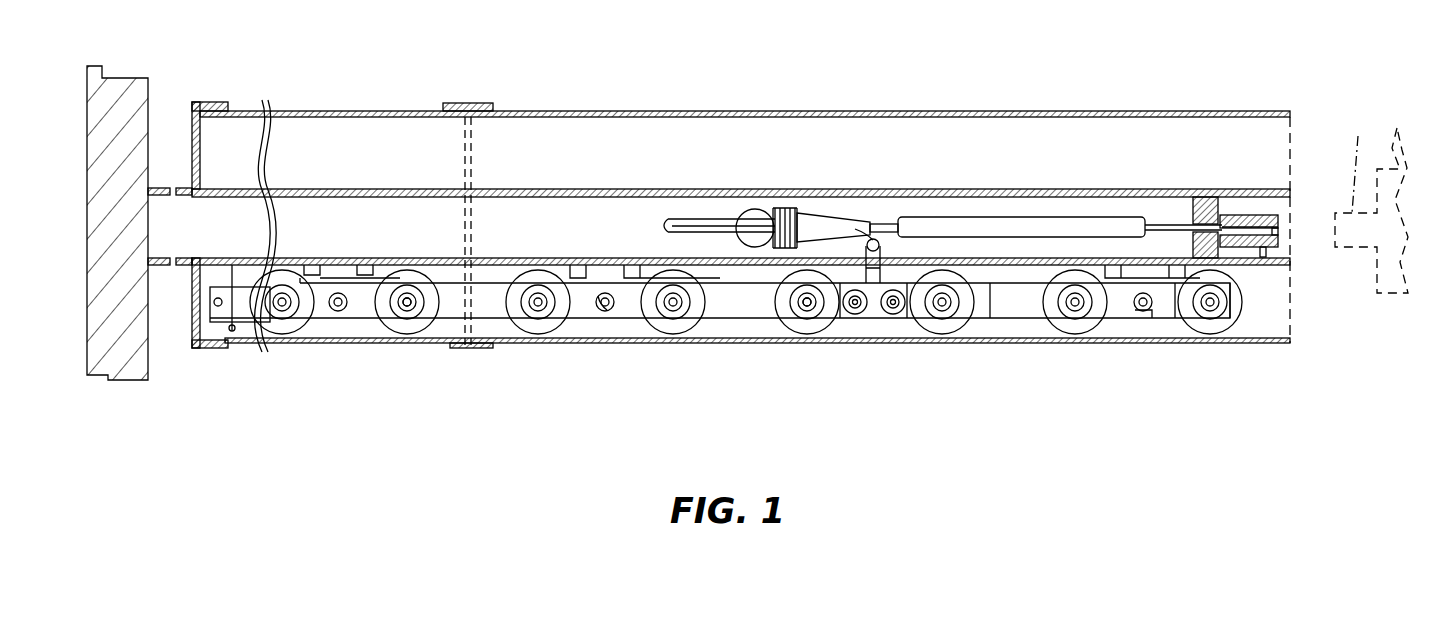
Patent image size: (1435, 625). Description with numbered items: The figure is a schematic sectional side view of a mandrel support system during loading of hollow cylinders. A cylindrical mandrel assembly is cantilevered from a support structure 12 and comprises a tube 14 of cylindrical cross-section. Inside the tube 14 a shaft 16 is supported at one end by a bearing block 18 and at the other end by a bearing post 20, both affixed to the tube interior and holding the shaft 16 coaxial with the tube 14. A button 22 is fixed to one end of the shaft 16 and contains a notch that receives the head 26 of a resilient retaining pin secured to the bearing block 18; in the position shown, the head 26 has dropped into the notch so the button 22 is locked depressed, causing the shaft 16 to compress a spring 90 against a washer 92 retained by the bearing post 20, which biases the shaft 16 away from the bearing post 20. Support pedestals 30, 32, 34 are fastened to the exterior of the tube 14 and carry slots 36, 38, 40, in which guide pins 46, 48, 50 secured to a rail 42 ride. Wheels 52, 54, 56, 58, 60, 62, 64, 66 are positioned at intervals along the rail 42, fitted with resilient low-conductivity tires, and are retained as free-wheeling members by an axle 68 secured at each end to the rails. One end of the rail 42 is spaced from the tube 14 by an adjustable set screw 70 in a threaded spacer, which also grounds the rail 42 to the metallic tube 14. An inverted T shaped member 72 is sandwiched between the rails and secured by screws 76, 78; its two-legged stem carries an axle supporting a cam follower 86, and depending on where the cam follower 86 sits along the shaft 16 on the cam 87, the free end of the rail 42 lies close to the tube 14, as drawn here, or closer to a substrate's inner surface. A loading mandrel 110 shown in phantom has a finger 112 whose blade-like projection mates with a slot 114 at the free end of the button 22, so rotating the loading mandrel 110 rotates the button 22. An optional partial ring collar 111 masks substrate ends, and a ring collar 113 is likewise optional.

The support structure 12 is at (118, 78).
The tube 14 is at (1093, 189).
The shaft 16 is at (1008, 216).
The bearing block 18 is at (1218, 200).
The bearing post 20 is at (745, 213).
The button 22 is at (1255, 215).
The head 26 is at (1275, 345).
The support pedestal 30 is at (377, 345).
The support pedestal 32 is at (643, 348).
The support pedestal 34 is at (1180, 350).
The slot 36 is at (296, 332).
The slot 38 is at (615, 340).
The slot 40 is at (1153, 340).
The rail 42 is at (1015, 340).
The guide pin 46 is at (347, 340).
The guide pin 48 is at (580, 345).
The guide pin 50 is at (1117, 345).
The wheel 52 is at (293, 343).
The wheel 54 is at (433, 345).
The wheel 56 is at (515, 345).
The wheel 58 is at (700, 345).
The wheel 60 is at (773, 345).
The wheel 62 is at (968, 345).
The wheel 64 is at (1043, 345).
The wheel 66 is at (1235, 345).
The axle 68 is at (735, 400).
The adjustable set screw 70 is at (192, 325).
The inverted T shaped member 72 is at (860, 230).
The screw 76 is at (896, 345).
The screw 78 is at (845, 345).
The cam follower 86 is at (862, 340).
The cam 87 is at (836, 215).
The spring 90 is at (798, 215).
The washer 92 is at (779, 208).
The loading mandrel 110 is at (1377, 191).
The partial ring collar 111 is at (472, 104).
The finger 112 is at (1361, 166).
The ring collar 113 is at (212, 100).
The slot 114 is at (1278, 232).